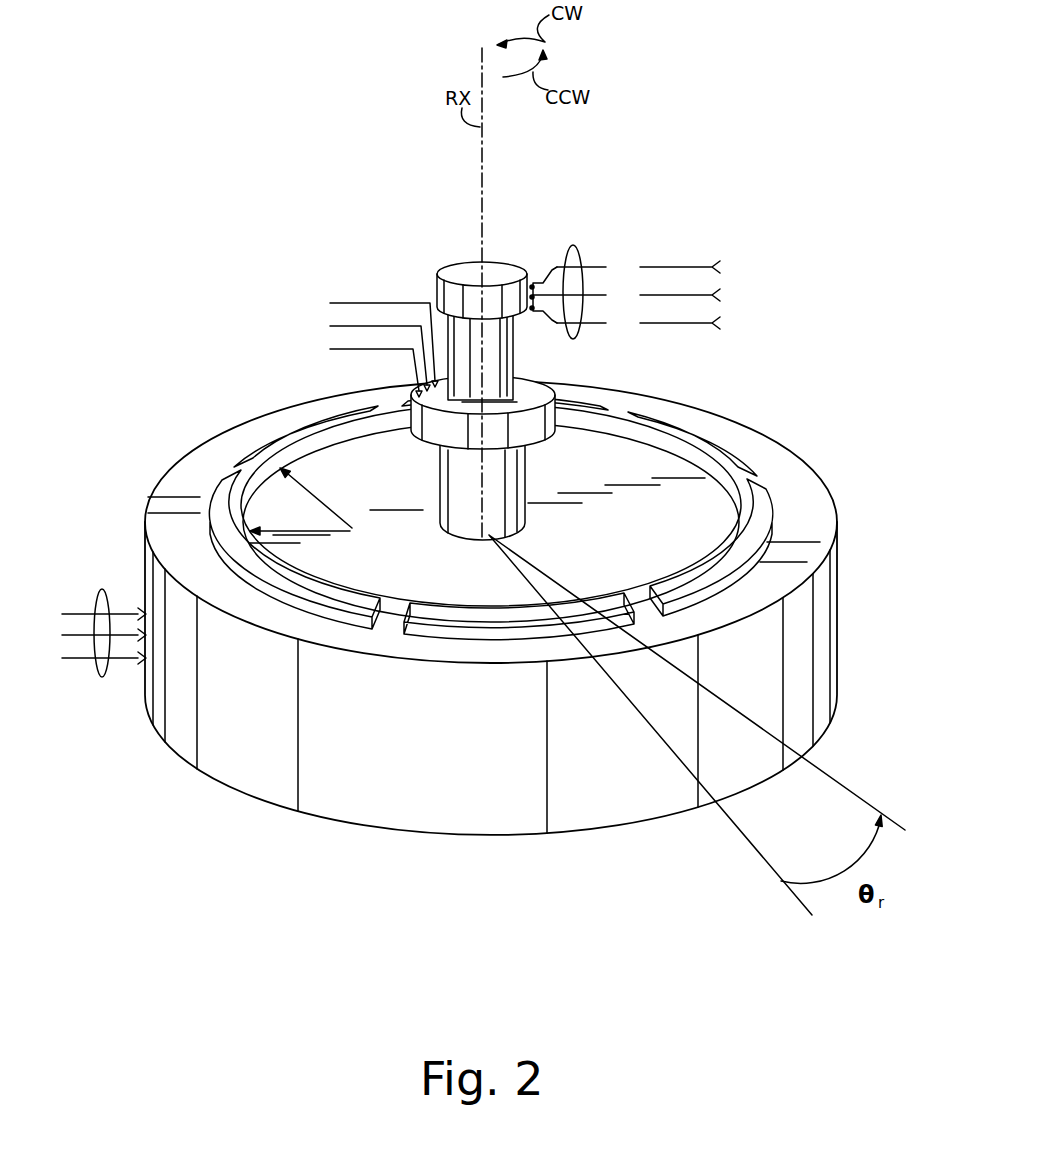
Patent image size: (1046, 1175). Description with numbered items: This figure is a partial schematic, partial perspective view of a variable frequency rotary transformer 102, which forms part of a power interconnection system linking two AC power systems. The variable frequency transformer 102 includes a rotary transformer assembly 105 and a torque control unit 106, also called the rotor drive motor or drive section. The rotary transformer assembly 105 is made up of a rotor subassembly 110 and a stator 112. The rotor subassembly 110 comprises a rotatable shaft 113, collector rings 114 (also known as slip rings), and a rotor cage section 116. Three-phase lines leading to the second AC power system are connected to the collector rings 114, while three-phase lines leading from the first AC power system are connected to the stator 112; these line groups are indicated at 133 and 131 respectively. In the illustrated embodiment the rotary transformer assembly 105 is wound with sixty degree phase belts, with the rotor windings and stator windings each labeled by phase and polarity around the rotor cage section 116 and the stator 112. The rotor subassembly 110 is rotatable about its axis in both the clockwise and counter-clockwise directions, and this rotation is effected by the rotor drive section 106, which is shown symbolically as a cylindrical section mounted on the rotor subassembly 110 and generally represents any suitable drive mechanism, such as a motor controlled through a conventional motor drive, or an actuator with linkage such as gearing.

The variable frequency transformer 102 is at (782, 402).
The rotary transformer assembly 105 is at (849, 445).
The torque control unit 106 is at (421, 446).
The rotor subassembly 110 is at (541, 466).
The stator 112 is at (836, 597).
The rotatable shaft 113 is at (462, 491).
The collector rings 114 is at (444, 253).
The rotor cage section 116 is at (568, 545).
The stator terminals 131 is at (100, 666).
The rotor terminals 133 is at (571, 254).